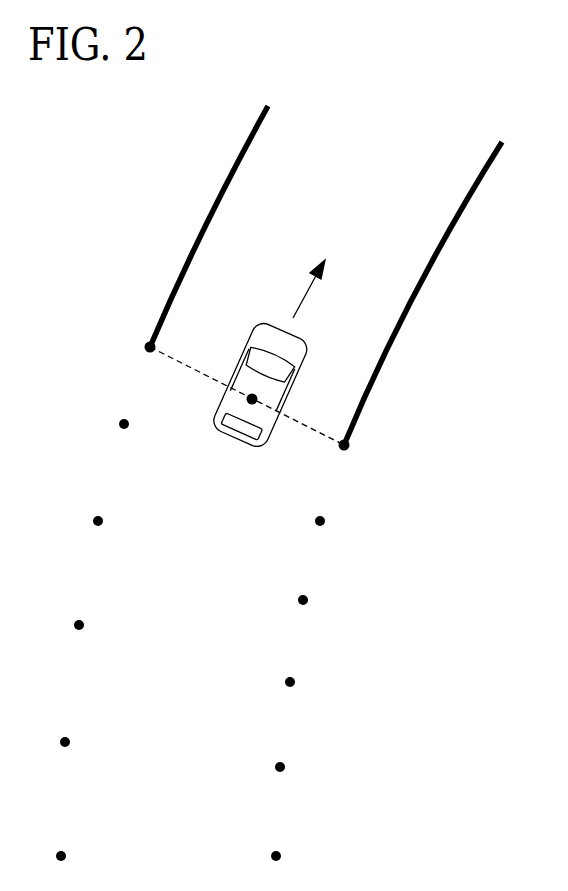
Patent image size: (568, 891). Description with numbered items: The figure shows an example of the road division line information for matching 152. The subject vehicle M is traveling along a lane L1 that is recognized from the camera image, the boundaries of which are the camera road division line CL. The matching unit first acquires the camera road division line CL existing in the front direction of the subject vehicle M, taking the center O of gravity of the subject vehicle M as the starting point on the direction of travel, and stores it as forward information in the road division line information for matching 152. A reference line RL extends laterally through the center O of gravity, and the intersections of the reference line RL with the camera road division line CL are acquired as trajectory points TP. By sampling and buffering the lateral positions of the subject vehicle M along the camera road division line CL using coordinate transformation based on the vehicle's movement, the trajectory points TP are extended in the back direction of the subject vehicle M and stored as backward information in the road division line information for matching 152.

The road division line information for matching 152 is at (121, 137).
The lane L1 is at (393, 137).
The camera road division line CL is at (437, 252).
The trajectory point TP is at (351, 445).
The center of gravity O is at (256, 393).
The subject vehicle M is at (230, 449).
The reference line RL is at (311, 431).